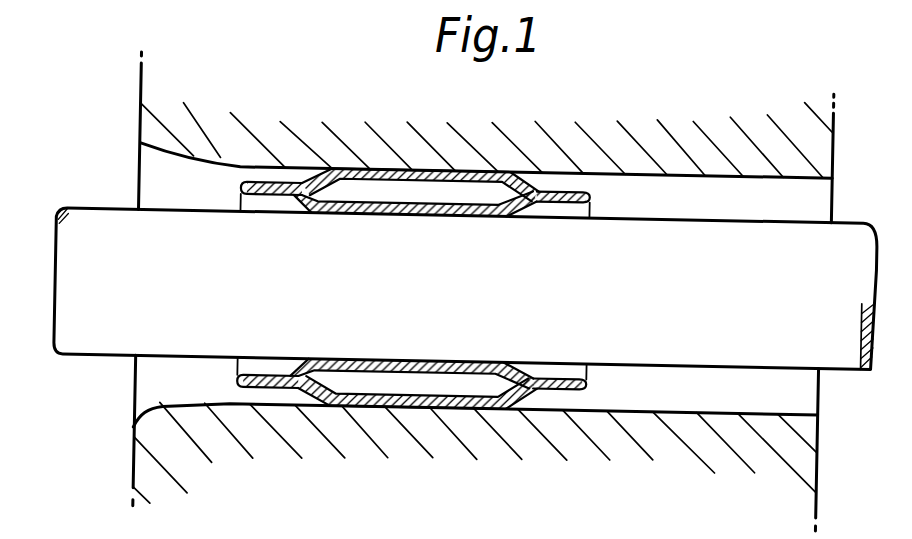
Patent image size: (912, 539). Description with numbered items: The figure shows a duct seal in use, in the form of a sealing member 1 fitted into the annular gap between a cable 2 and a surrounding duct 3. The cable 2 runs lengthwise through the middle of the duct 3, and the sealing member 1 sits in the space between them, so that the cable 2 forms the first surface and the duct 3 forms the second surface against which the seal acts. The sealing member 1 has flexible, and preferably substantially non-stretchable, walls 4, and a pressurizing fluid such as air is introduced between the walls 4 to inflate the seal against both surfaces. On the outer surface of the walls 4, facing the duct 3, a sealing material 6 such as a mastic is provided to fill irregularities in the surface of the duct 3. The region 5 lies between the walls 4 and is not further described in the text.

The sealing member 1 is at (234, 192).
The cable 2 is at (106, 229).
The duct 3 is at (274, 150).
The walls 4 is at (344, 407).
The cavity 5 is at (487, 386).
The sealing material 6 is at (391, 171).